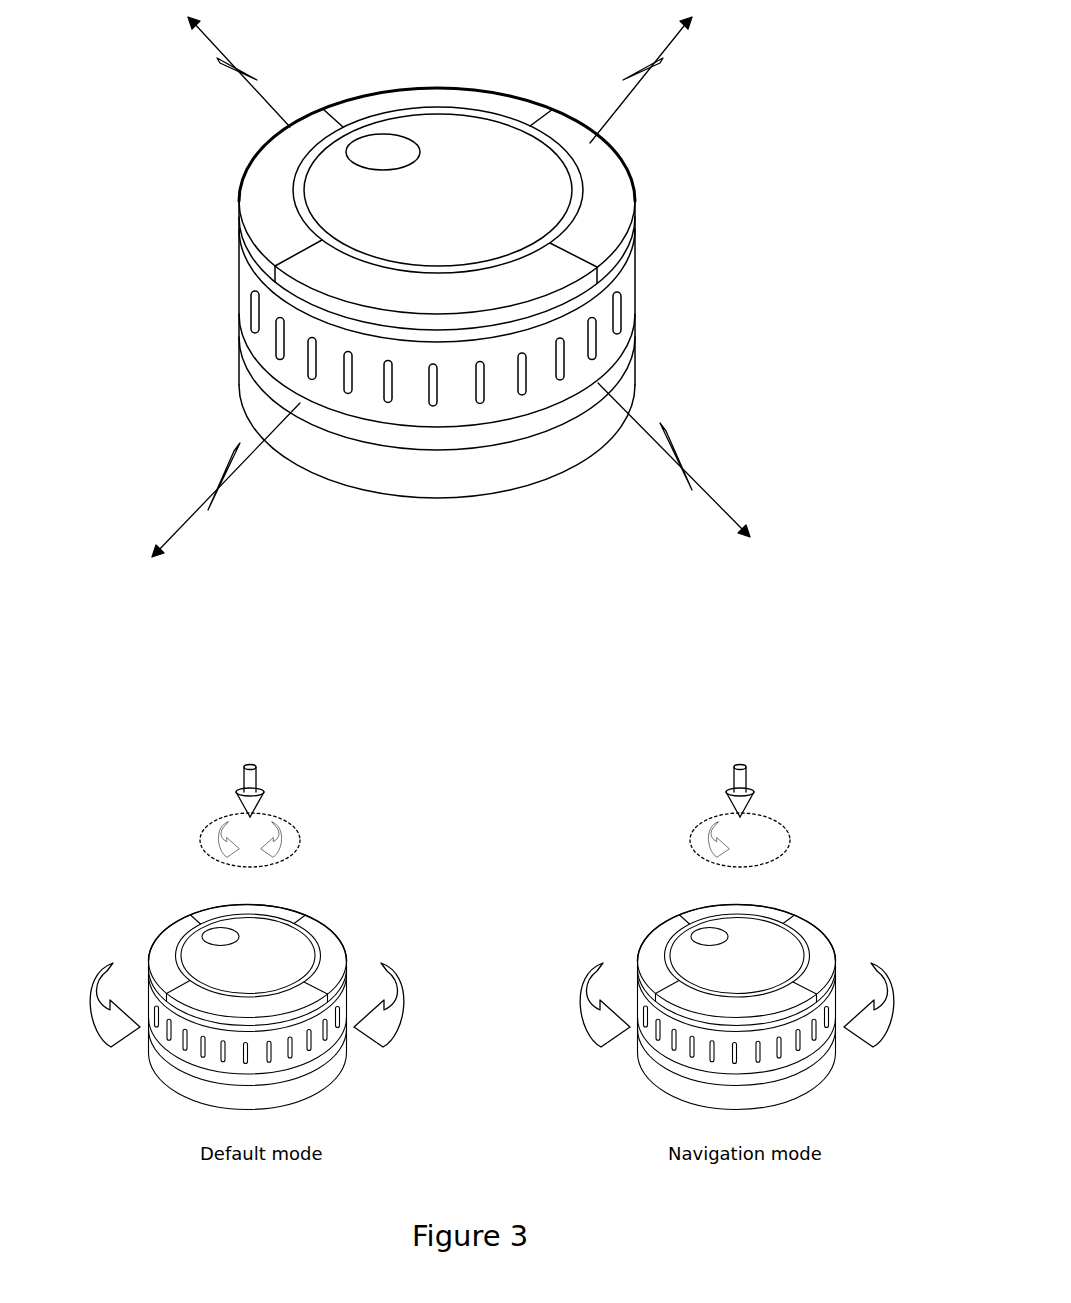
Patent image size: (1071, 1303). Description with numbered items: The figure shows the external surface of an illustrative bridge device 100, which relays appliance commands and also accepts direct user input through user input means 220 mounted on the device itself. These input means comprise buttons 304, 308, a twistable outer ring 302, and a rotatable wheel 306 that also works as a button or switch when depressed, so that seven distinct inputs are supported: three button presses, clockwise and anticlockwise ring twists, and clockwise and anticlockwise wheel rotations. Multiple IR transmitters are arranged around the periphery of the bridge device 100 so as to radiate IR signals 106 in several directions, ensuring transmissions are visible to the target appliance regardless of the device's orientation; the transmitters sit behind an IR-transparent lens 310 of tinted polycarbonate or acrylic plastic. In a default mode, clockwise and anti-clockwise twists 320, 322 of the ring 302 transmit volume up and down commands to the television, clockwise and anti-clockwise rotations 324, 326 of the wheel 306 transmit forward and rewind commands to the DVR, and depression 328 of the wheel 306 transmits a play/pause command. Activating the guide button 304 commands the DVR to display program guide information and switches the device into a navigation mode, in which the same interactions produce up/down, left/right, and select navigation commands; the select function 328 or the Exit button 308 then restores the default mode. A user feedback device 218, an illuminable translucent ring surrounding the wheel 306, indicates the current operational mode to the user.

The bridge device 100 is at (426, 318).
The IR signals 106 is at (228, 53).
The user feedback device 218 is at (790, 932).
The user input means 220 is at (768, 90).
The twistable ring 302 is at (603, 325).
The button 304 is at (590, 160).
The rotatable wheel 306 is at (427, 173).
The Exit button 308 is at (263, 233).
The IR-transparent lens 310 is at (247, 355).
The clockwise twist 320 is at (378, 963).
The anti-clockwise twist 322 is at (116, 963).
The clockwise rotation 324 is at (273, 828).
The anti-clockwise rotation 326 is at (228, 828).
The depression of wheel 328 is at (245, 741).